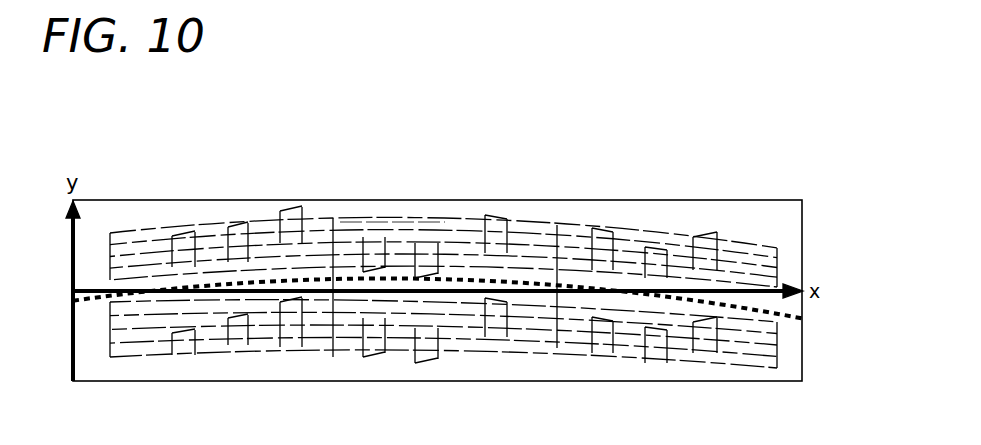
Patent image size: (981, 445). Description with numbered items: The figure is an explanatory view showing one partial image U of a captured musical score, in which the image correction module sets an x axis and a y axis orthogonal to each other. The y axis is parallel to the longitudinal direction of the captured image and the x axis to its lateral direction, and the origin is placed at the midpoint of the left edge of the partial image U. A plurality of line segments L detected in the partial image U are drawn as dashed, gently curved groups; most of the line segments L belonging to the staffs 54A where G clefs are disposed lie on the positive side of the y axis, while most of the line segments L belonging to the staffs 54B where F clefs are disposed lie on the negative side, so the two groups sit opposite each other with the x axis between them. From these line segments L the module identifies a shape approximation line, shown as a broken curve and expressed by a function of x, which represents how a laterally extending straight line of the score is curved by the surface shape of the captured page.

The partial image U is at (802, 222).
The staffs where G clefs are disposed 54A is at (826, 249).
The staffs where F clefs are disposed 54B is at (826, 334).
The line segments L is at (430, 218).